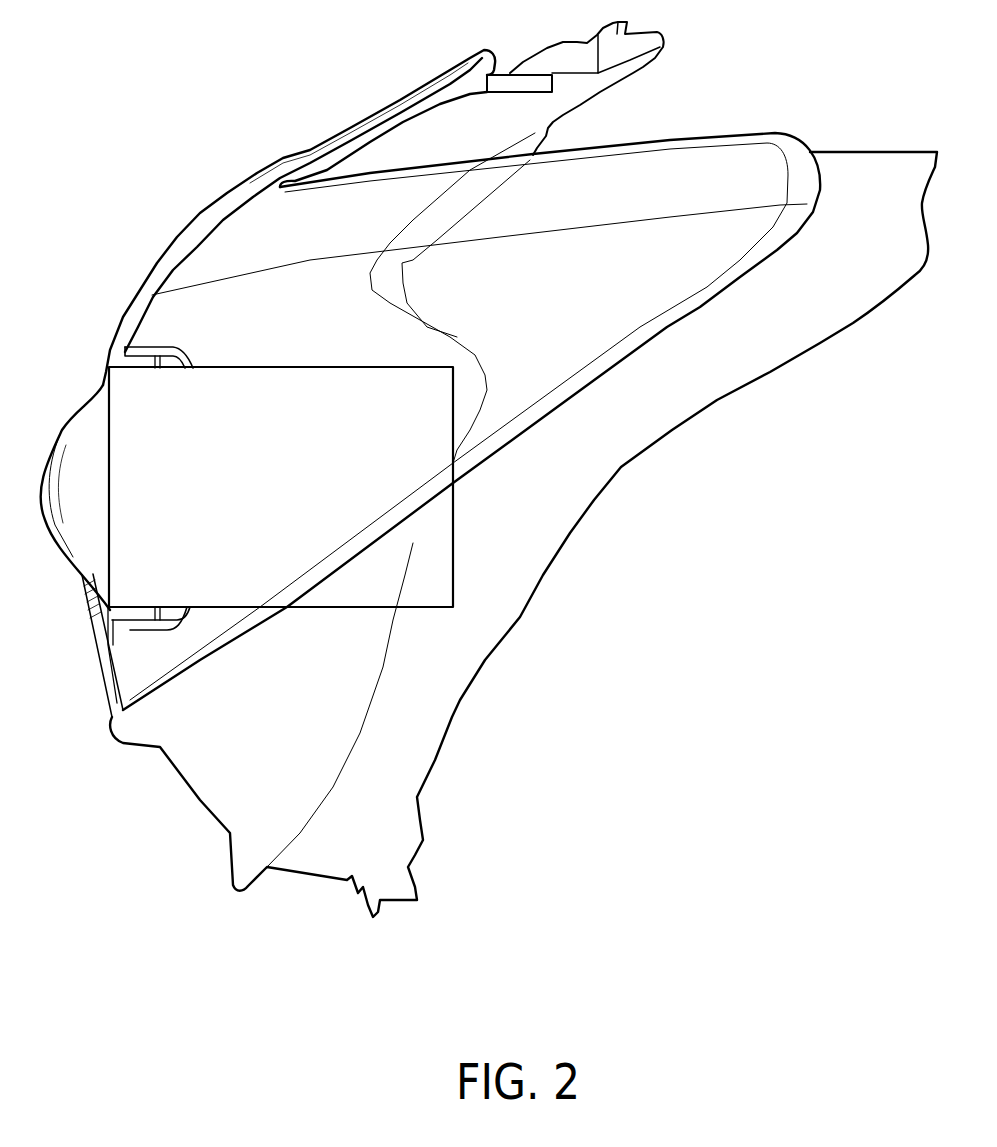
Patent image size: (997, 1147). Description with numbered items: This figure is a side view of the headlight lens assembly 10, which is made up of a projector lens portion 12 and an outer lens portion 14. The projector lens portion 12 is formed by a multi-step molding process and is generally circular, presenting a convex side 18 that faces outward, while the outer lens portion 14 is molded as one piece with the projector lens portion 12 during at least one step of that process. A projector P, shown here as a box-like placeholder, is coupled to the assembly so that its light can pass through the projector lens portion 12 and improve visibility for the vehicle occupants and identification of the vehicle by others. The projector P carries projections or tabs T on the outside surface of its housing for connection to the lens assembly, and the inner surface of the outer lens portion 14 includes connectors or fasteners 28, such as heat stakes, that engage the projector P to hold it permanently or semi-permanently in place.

The headlight lens assembly 10 is at (210, 948).
The projector lens portion 12 is at (67, 550).
The outer lens portion 14 is at (452, 717).
The convex side 18 is at (67, 423).
The fasteners 28 is at (143, 363).
The tabs T is at (182, 347).
The projector P is at (453, 547).